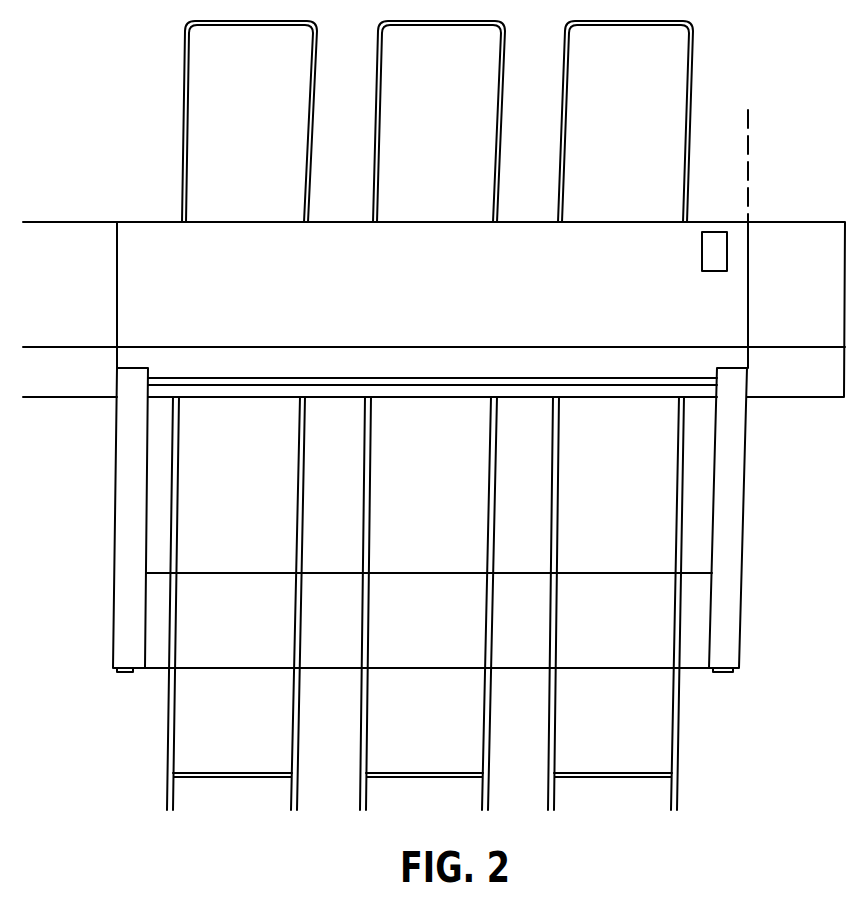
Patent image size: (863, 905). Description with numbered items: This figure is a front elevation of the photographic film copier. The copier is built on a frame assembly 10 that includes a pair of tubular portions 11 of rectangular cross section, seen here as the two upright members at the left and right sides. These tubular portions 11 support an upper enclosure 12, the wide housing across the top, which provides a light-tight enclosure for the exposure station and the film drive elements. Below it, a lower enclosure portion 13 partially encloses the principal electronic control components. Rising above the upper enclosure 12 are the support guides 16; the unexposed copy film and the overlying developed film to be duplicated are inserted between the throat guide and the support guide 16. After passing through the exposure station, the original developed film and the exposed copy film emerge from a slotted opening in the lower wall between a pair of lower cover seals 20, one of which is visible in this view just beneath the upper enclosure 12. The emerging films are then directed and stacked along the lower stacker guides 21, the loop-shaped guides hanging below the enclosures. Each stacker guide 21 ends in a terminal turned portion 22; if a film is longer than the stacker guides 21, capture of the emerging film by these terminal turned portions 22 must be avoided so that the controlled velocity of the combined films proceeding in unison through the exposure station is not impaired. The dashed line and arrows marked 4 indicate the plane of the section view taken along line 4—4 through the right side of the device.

The frame assembly 10 is at (758, 509).
The tubular portions 11 is at (115, 449).
The upper enclosure 12 is at (433, 221).
The lower enclosure portion 13 is at (250, 669).
The support guide 16 is at (695, 77).
The lower cover seals 20 is at (648, 388).
The lower stacker guides 21 is at (680, 713).
The terminal turned portions 22 is at (607, 778).
The section line 4— 4 is at (756, 135).